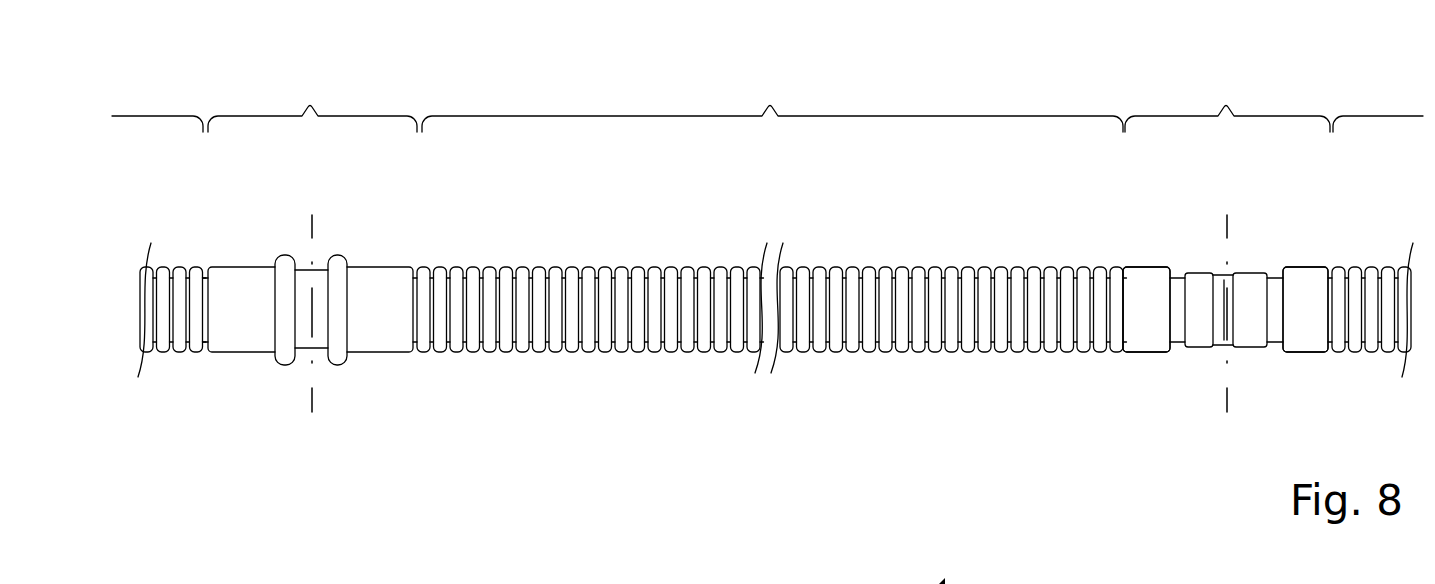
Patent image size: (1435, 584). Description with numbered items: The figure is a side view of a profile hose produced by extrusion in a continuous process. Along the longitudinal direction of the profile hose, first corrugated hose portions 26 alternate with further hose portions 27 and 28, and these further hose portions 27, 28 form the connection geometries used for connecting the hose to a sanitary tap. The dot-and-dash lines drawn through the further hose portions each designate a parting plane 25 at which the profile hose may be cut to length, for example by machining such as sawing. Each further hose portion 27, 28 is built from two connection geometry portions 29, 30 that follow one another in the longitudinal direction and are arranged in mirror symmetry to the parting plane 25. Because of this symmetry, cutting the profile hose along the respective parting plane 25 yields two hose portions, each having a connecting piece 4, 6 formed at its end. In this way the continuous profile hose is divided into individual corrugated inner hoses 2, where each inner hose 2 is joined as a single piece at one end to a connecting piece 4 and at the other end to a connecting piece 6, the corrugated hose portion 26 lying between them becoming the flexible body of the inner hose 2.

The corrugated inner hose 2 is at (557, 278).
The connecting piece 4 is at (243, 280).
The connecting piece 6 is at (1177, 288).
The parting plane 25 is at (313, 230).
The first corrugated hose portion 26 is at (770, 105).
The further hose portion 27 is at (310, 105).
The further hose portion 28 is at (1226, 105).
The connection geometry portion 29 is at (247, 337).
The connection geometry portion 30 is at (1148, 335).